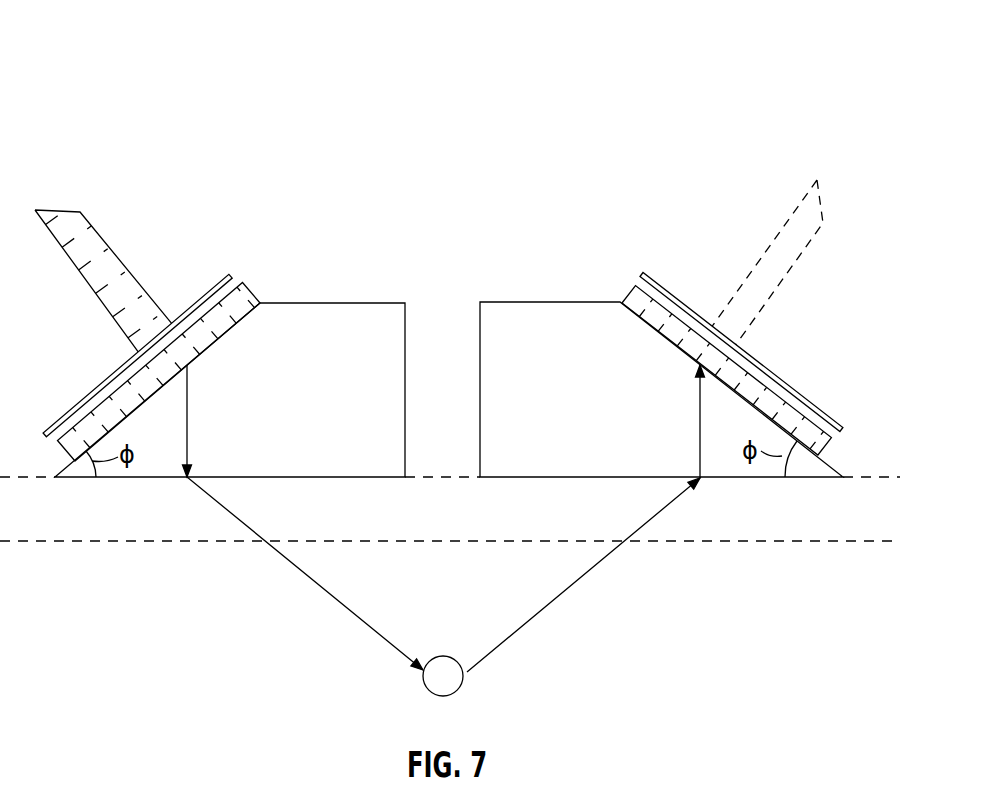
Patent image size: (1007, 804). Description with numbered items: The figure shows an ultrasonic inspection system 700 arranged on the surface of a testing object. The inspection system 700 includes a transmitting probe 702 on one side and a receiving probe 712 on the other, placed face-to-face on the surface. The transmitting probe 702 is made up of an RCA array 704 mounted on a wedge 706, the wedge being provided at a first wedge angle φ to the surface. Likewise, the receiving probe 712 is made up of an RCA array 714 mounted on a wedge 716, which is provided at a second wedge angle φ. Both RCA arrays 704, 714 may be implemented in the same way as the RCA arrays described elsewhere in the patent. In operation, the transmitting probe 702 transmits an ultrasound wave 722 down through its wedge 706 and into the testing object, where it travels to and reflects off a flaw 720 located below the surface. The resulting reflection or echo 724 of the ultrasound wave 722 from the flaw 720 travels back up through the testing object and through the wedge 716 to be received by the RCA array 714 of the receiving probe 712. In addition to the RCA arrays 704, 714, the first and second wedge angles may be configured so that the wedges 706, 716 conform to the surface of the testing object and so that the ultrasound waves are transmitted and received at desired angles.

The inspection system 700 is at (142, 50).
The transmitting probe 702 is at (100, 187).
The RCA array 704 is at (242, 284).
The wedge 706 is at (363, 303).
The receiving probe 712 is at (773, 172).
The RCA array 714 is at (640, 283).
The wedge 716 is at (515, 300).
The flaw 720 is at (463, 680).
The ultrasound wave 722 is at (288, 567).
The reflection or echo 724 is at (592, 570).